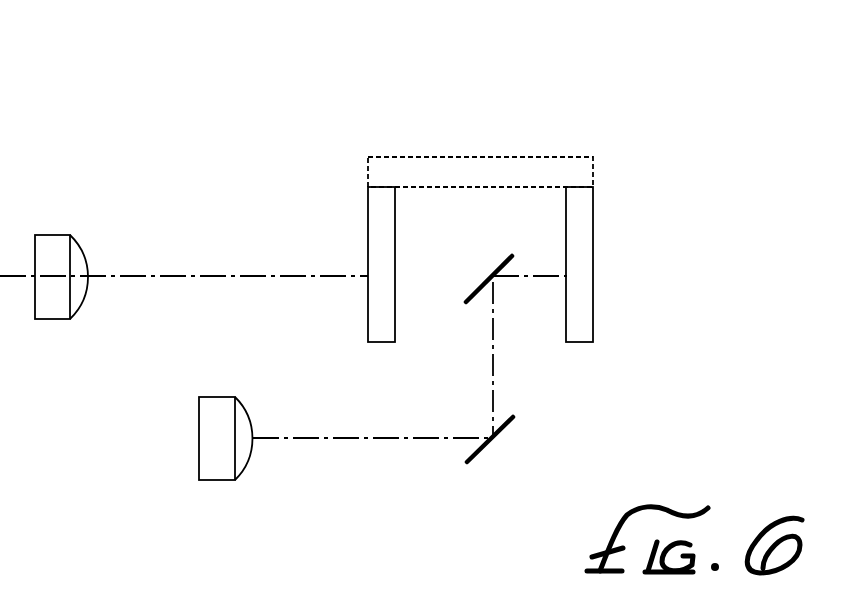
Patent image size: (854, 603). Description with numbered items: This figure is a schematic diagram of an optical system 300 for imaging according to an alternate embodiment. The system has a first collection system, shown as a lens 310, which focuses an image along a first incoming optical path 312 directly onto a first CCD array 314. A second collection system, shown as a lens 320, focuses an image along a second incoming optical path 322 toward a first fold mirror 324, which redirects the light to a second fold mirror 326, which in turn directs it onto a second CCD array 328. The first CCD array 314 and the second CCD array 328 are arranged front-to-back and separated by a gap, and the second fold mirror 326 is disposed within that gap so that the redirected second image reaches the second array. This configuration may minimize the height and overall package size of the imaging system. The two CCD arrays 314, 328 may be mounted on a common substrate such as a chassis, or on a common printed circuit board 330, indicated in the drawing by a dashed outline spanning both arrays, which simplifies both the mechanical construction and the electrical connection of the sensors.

The optical system 300 is at (212, 63).
The lens 310 is at (56, 319).
The first incoming optical path 312 is at (163, 279).
The first CCD array 314 is at (368, 330).
The lens 320 is at (216, 480).
The second incoming optical path 322 is at (335, 438).
The first fold mirror 324 is at (513, 427).
The second fold mirror 326 is at (497, 267).
The second CCD array 328 is at (593, 312).
The common printed circuit board 330 is at (398, 157).